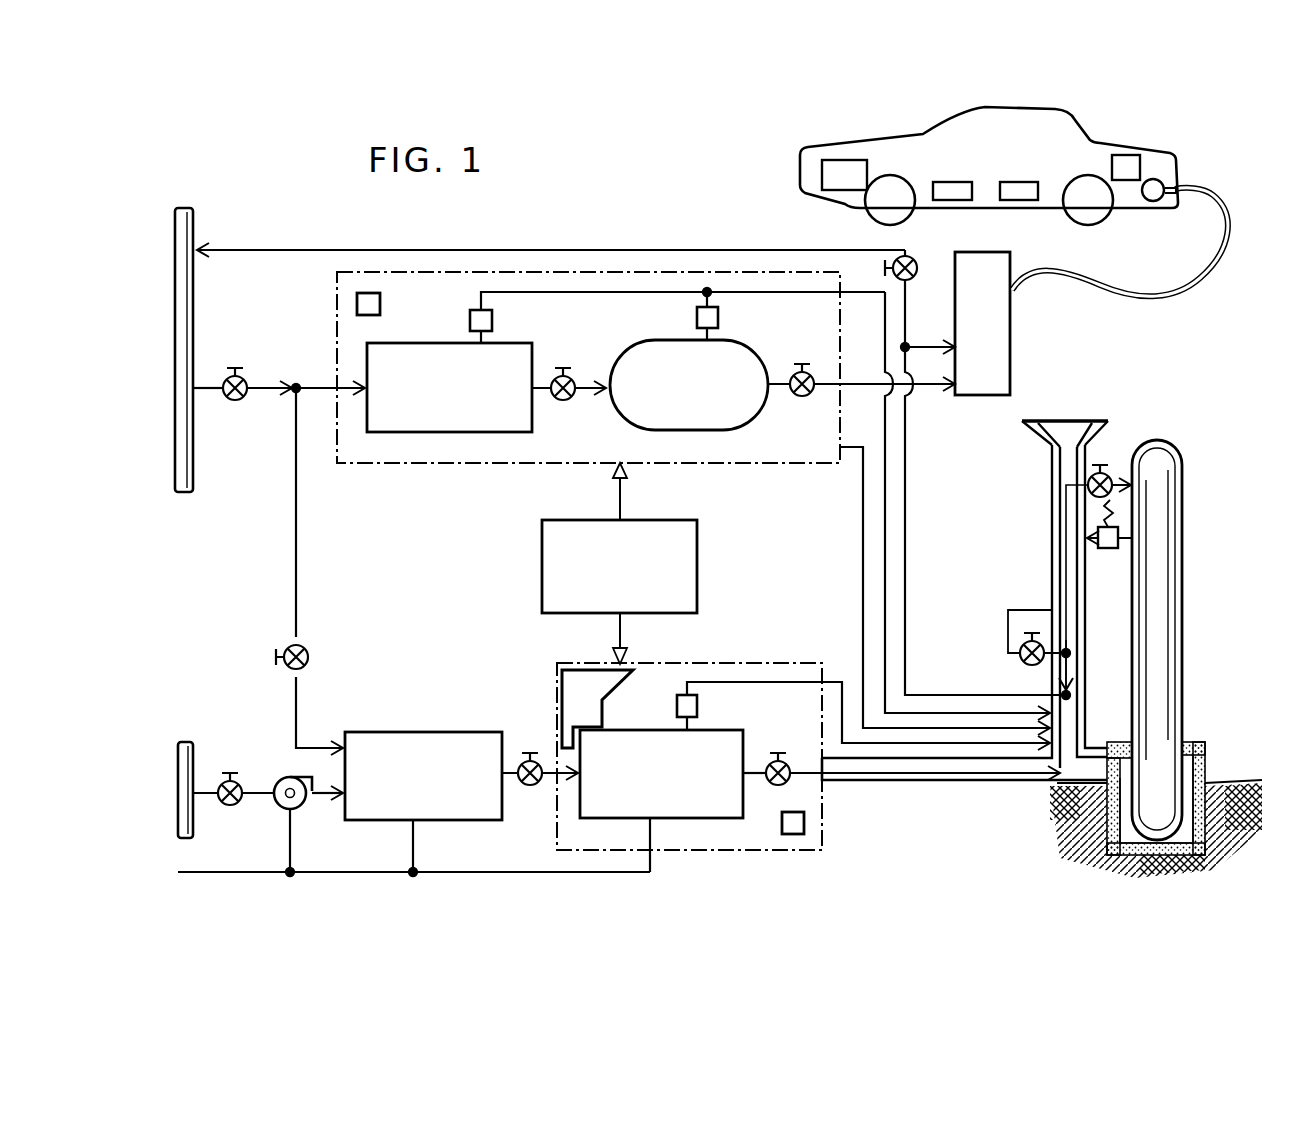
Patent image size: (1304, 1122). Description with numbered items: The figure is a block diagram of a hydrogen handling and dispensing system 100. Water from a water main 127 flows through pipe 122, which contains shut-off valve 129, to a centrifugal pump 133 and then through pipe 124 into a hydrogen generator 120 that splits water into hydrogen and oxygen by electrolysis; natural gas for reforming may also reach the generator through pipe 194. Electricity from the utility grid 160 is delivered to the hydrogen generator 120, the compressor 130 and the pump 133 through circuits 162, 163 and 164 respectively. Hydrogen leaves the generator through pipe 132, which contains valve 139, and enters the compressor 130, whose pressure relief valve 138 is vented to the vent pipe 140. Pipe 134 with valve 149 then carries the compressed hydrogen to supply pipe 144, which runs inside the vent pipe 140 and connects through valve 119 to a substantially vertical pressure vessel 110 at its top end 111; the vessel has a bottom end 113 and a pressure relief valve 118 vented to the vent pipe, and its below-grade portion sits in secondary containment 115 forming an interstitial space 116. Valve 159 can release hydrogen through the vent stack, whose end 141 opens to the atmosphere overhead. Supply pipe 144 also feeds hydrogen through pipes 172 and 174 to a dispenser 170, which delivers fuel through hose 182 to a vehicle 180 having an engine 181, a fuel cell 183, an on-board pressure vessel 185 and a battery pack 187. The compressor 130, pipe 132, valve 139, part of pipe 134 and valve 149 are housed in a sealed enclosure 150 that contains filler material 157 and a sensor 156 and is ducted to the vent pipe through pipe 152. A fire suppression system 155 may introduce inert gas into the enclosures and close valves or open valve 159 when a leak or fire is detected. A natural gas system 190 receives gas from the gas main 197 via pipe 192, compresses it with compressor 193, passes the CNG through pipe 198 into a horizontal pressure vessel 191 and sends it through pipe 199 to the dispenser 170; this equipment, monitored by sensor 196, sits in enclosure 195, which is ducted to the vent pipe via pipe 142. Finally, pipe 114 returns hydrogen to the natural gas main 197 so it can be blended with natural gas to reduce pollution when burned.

The system 100 is at (316, 196).
The pressure vessel 110 is at (1192, 569).
The top end 111 is at (1165, 441).
The bottom end 113 is at (1120, 834).
The pipe 114 is at (607, 247).
The secondary containment 115 is at (1207, 742).
The interstitial space 116 is at (1192, 771).
The pressure relief valve 118 is at (1112, 549).
The valve 119 is at (1100, 465).
The hydrogen generator 120 is at (419, 730).
The pipe 122 is at (287, 748).
The pipe 124 is at (321, 781).
The water main 127 is at (198, 734).
The valve 129 is at (232, 774).
The compressor 130 is at (721, 821).
The pipe 132 is at (578, 776).
The pump 133 is at (277, 809).
The pipe 134 is at (830, 776).
The pressure relief valve 138 is at (683, 695).
The valve 139 is at (531, 754).
The vent pipe 140 is at (1050, 506).
The end 141 is at (1060, 420).
The pipe 142 is at (863, 528).
The supply pipe 144 is at (1066, 573).
The valve 149 is at (770, 752).
The enclosure 150 is at (759, 661).
The duct or pipe 152 is at (950, 787).
The fire suppression system 155 is at (540, 557).
The sensor 156 is at (808, 836).
The filler material 157 is at (576, 682).
The valve 159 is at (1028, 679).
The electrical power utility grid 160 is at (276, 872).
The electrical circuit 162 is at (415, 838).
The electrical circuit 163 is at (650, 833).
The electrical circuit 164 is at (297, 836).
The dispenser 170 is at (1014, 348).
The pipe 172 is at (910, 538).
The pipe 174 is at (913, 347).
The vehicle 180 is at (820, 146).
The engine 181 is at (833, 178).
The hose 182 is at (1197, 280).
The fuel cell 183 is at (1128, 162).
The pressure vessel 185 is at (1143, 203).
The battery pack 187 is at (1013, 201).
The natural gas system 190 is at (176, 205).
The pressure vessel 191 is at (758, 349).
The pipe 192 is at (282, 392).
The compressor 193 is at (510, 341).
The pipe 194 is at (296, 540).
The enclosure 195 is at (710, 467).
The sensor 196 is at (357, 305).
The gas main 197 is at (196, 334).
The pipe 198 is at (602, 392).
The pipe 199 is at (824, 390).